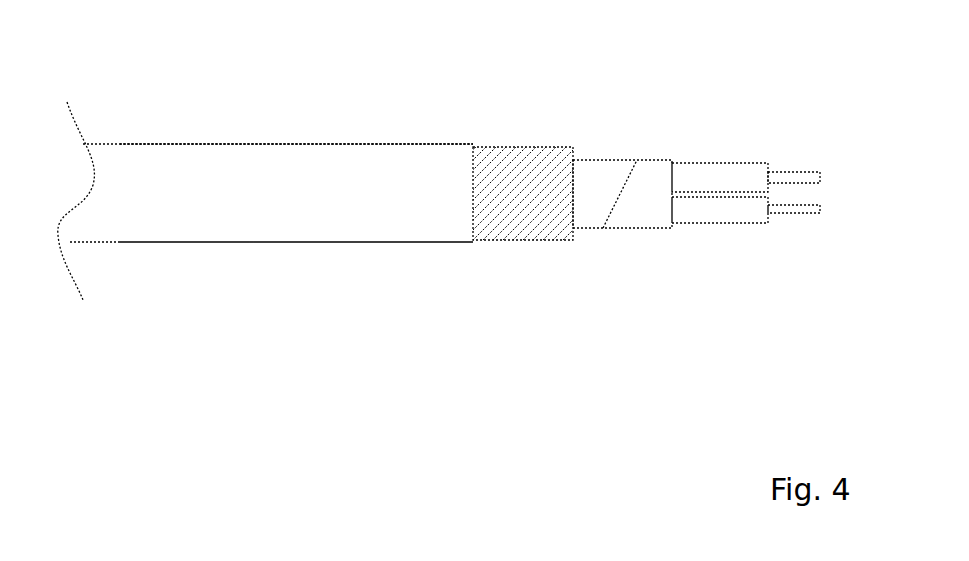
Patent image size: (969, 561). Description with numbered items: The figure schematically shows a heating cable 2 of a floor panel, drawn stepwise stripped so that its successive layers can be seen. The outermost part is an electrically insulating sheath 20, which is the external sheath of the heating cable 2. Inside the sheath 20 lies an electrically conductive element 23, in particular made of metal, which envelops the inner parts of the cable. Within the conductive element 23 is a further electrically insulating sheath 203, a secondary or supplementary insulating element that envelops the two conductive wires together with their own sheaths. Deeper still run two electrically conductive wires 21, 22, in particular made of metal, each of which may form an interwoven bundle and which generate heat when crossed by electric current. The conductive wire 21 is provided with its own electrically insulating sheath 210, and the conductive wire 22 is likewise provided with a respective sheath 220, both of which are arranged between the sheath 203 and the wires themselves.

The heating cable 2 is at (303, 130).
The electrically insulating sheath 20 is at (305, 197).
The electrically conductive element 23 is at (508, 198).
The further electrically insulating sheath 203 is at (631, 202).
The electrically insulating sheath 210 is at (725, 178).
The electrically conductive wire 21 is at (795, 173).
The sheath 220 is at (725, 210).
The electrically conductive wire 22 is at (793, 210).